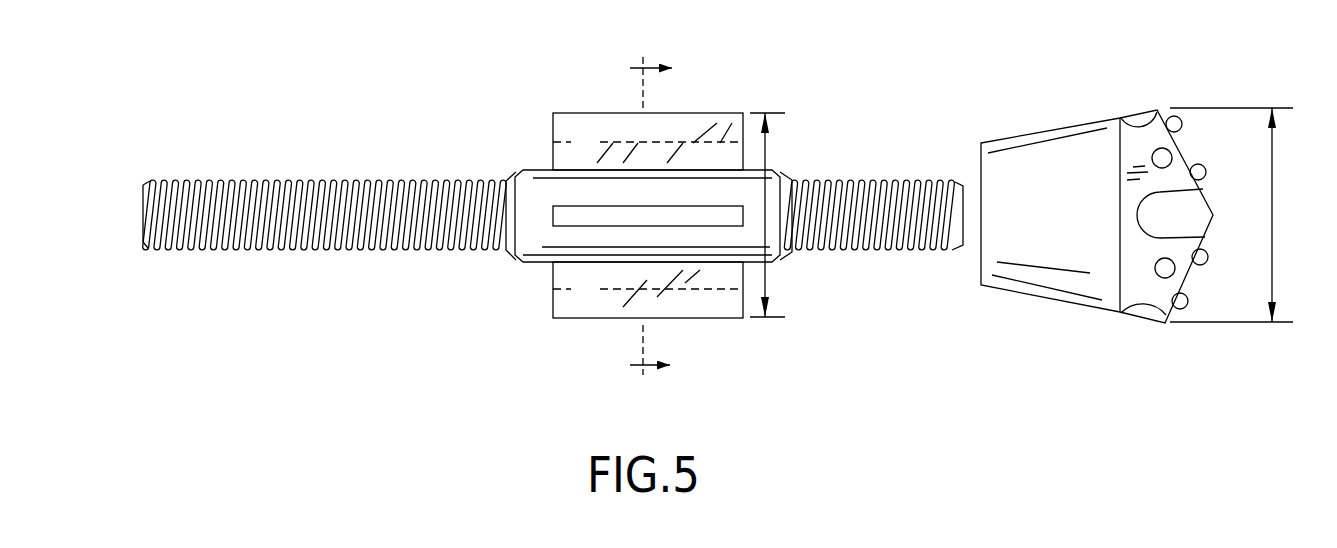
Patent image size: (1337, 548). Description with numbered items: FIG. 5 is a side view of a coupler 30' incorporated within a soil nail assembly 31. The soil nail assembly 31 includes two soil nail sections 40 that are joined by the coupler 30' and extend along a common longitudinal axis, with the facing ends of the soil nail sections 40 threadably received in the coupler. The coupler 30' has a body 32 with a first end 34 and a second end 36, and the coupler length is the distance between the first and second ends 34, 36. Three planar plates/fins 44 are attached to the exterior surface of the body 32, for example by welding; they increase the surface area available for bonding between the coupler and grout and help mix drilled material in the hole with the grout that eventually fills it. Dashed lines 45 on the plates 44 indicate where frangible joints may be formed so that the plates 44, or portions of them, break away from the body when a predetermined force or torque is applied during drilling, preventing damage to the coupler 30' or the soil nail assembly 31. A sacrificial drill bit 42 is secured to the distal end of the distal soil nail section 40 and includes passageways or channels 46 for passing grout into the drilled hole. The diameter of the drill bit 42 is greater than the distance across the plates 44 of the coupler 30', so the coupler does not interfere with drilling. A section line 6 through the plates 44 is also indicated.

The section line 6- 6 is at (651, 220).
The coupler 30' is at (875, 42).
The soil nail assembly 31 is at (834, 306).
The body 32 is at (547, 183).
The first end 34 is at (510, 173).
The second end 36 is at (777, 172).
The soil nail section 40 is at (338, 187).
The sacrificial drill bit 42 is at (1116, 96).
The plates/fins 44 is at (603, 216).
The dashed lines 45 is at (677, 142).
The passageways or channels 46 is at (1145, 118).